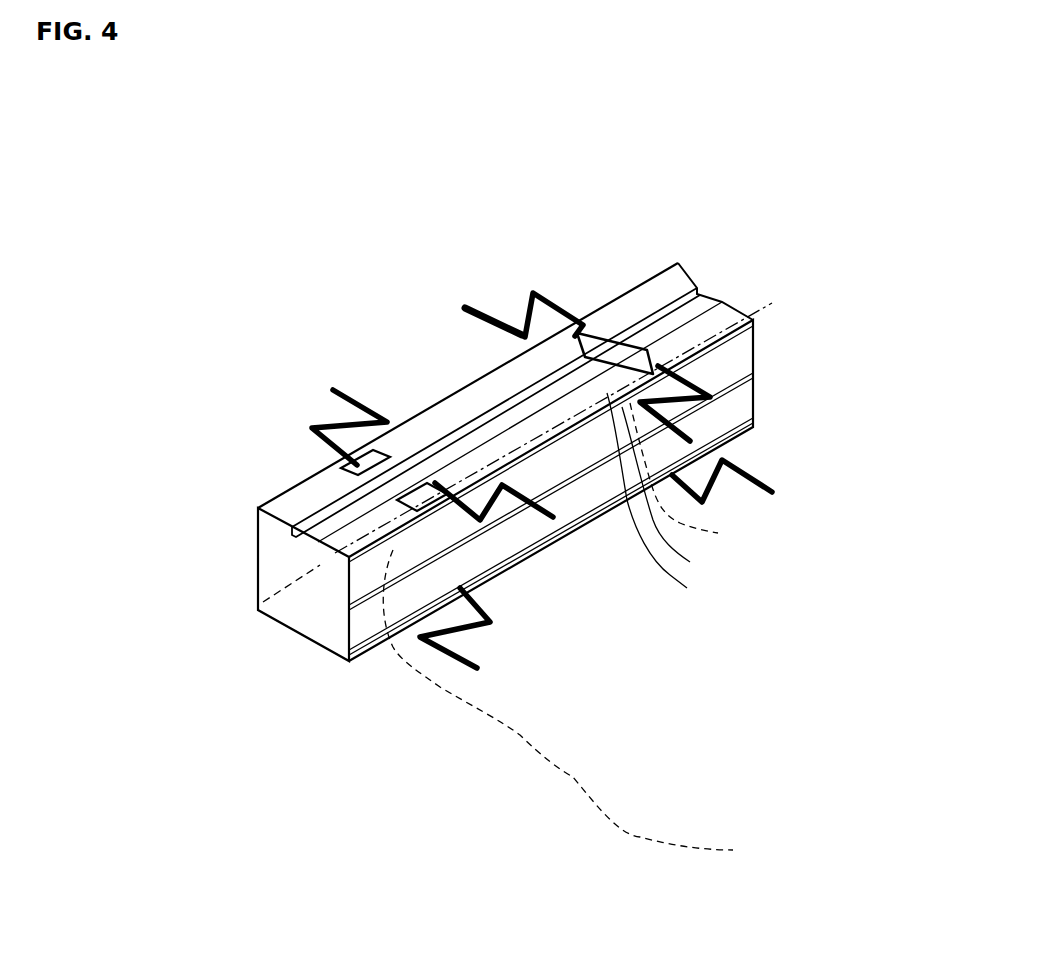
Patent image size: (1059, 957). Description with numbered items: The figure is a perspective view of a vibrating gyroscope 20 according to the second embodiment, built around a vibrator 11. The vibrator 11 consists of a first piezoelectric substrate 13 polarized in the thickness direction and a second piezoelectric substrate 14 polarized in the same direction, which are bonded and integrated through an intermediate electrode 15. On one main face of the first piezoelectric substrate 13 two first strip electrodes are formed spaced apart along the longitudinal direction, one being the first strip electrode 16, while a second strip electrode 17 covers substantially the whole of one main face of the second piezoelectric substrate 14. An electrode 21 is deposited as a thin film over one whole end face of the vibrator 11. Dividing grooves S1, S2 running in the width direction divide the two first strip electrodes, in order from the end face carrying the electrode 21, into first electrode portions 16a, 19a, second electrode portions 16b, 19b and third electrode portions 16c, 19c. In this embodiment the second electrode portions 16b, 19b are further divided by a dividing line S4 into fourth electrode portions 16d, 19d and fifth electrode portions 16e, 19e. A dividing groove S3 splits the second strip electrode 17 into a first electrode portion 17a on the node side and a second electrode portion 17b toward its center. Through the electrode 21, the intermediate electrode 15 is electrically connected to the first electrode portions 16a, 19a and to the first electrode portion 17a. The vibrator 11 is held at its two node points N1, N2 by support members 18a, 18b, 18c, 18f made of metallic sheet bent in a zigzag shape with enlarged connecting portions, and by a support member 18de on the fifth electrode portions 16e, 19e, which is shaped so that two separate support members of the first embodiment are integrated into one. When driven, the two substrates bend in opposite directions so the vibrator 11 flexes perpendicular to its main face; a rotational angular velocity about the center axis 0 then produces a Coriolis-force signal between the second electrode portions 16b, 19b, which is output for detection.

The vibrating gyroscope 20 is at (749, 130).
The vibrator 11 is at (690, 276).
The first piezoelectric substrate 13 is at (736, 358).
The second piezoelectric substrate 14 is at (743, 409).
The intermediate electrode 15 is at (744, 390).
The first strip electrode 16 is at (458, 182).
The first electrode portion 16a is at (296, 503).
The second electrode portion 16b is at (330, 258).
The third electrode portion 16c is at (625, 305).
The fourth electrode portion 16d is at (437, 425).
The fifth electrode portion 16e is at (553, 362).
The second strip electrode 17 is at (797, 648).
The first electrode portion 17a is at (363, 653).
The second electrode portion 17b is at (603, 515).
The support member 18a is at (333, 390).
The support member 18b is at (570, 531).
The support member 18c is at (483, 667).
The support member 18de is at (742, 420).
The support member 18f is at (764, 492).
The first electrode portion 19a is at (310, 556).
The second electrode portion 19b is at (748, 569).
The third electrode portion 19c is at (733, 312).
The fourth electrode portion 19d is at (675, 503).
The fifth electrode portion 19e is at (682, 494).
The electrode 21 is at (274, 556).
The center axis 0 is at (248, 609).
The dividing groove S1 is at (342, 463).
The dividing groove S2 is at (590, 330).
The dividing groove S3 is at (480, 600).
The dividing line S4 is at (532, 368).
The node point N1 is at (578, 709).
The node point N2 is at (693, 477).